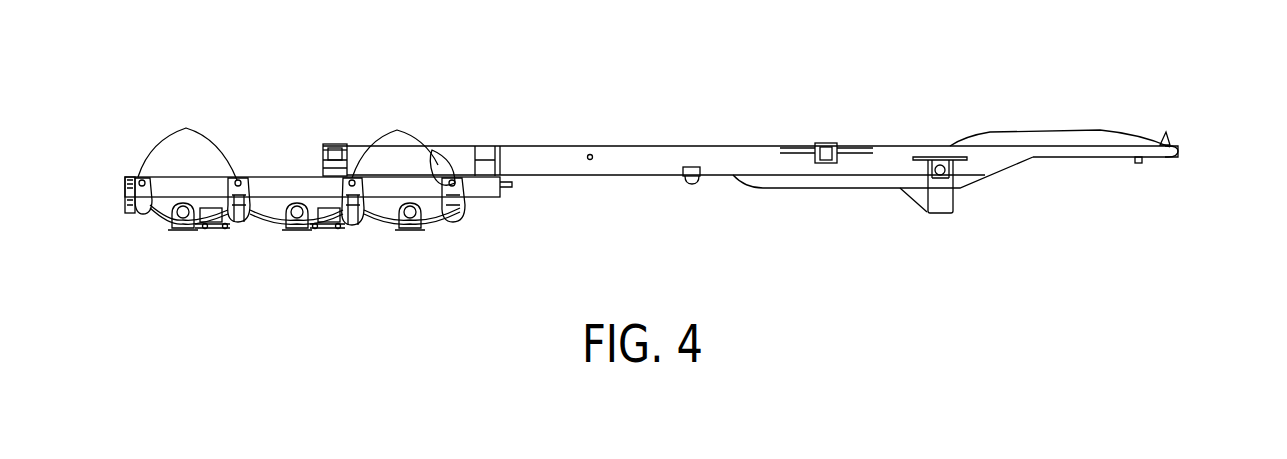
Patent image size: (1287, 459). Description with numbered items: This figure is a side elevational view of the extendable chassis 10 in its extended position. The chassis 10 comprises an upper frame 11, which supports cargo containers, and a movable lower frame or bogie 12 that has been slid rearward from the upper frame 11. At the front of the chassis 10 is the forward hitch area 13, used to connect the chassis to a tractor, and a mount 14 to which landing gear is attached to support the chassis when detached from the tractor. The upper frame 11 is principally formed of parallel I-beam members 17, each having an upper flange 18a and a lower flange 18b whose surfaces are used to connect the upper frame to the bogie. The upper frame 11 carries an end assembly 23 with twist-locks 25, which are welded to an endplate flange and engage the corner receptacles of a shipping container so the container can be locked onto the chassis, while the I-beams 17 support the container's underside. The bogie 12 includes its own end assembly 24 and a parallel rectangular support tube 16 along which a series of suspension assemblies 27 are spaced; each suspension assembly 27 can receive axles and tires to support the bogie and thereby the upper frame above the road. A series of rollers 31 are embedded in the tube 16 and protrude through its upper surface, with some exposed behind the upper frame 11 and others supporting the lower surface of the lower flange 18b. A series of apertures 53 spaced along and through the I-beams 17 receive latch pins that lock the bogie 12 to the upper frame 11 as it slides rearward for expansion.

The extendable chassis 10 is at (413, 88).
The upper frame 11 is at (762, 202).
The bogie 12 is at (141, 230).
The forward hitch area 13 is at (1186, 150).
The mount 14 is at (940, 222).
The rectangular support tube 16 is at (292, 188).
The I-beam member 17 is at (630, 160).
The upper flange 18a is at (545, 146).
The lower flange 18b is at (550, 176).
The end assembly 23 is at (314, 128).
The end assembly 24 is at (118, 190).
The twist-lock 25 is at (338, 145).
The suspension assembly 27 is at (183, 238).
The roller 31 is at (296, 138).
The aperture 53 is at (480, 146).